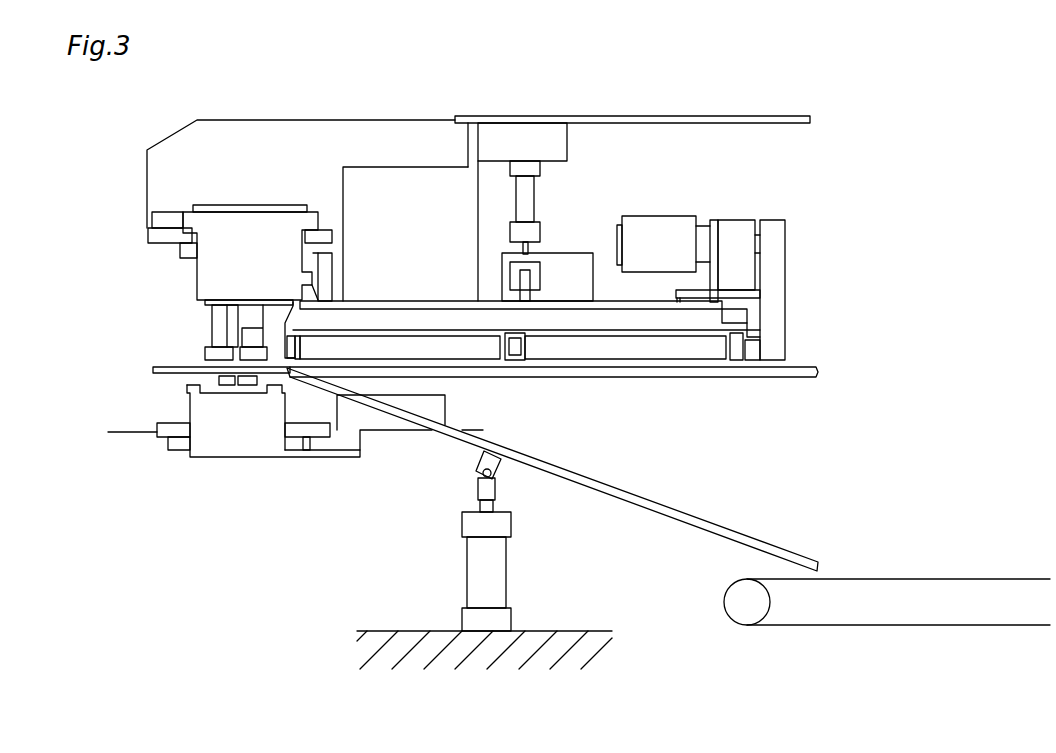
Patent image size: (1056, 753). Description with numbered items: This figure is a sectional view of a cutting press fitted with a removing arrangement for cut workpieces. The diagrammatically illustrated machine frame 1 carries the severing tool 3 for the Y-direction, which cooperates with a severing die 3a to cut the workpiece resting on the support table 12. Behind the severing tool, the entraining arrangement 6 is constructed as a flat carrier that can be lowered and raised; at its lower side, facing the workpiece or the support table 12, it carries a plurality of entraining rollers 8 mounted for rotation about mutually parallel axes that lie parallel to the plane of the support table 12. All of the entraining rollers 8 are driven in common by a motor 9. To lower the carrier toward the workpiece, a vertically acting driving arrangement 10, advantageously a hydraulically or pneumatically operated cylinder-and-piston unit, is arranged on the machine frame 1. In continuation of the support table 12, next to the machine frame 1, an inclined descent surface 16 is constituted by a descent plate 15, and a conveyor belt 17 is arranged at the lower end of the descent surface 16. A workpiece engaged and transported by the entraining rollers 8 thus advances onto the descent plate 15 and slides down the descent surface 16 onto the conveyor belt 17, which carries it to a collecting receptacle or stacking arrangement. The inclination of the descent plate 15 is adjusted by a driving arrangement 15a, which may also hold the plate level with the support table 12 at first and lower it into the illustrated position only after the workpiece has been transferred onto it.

The machine frame 1 is at (267, 133).
The severing tool 3 is at (215, 337).
The severing die 3a is at (153, 372).
The entraining arrangement 6 is at (659, 322).
The entraining rollers 8 is at (571, 350).
The motor 9 is at (701, 288).
The driving arrangement 10 is at (528, 188).
The support table 12 is at (754, 377).
The descent plate 15 is at (577, 483).
The driving arrangement 15a is at (480, 567).
The descent surface 16 is at (604, 485).
The conveyor belt 17 is at (951, 595).